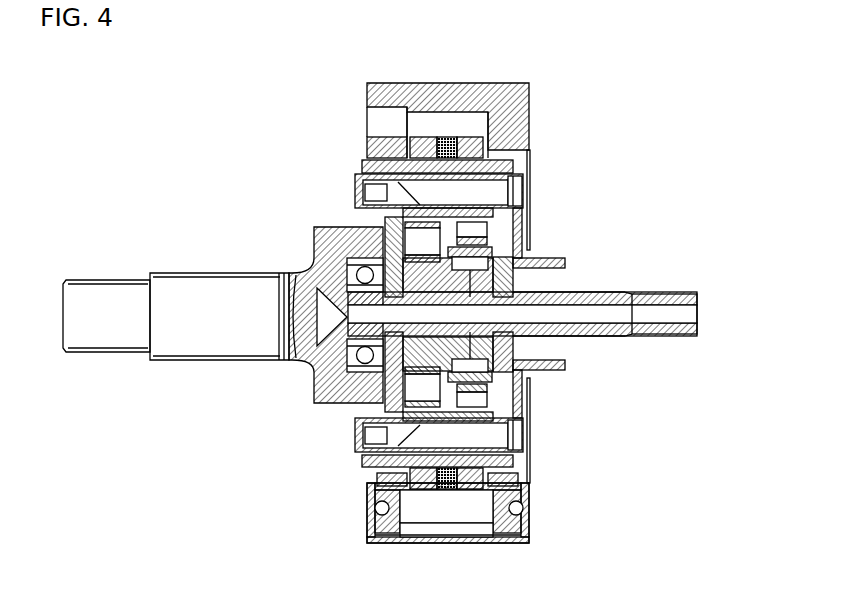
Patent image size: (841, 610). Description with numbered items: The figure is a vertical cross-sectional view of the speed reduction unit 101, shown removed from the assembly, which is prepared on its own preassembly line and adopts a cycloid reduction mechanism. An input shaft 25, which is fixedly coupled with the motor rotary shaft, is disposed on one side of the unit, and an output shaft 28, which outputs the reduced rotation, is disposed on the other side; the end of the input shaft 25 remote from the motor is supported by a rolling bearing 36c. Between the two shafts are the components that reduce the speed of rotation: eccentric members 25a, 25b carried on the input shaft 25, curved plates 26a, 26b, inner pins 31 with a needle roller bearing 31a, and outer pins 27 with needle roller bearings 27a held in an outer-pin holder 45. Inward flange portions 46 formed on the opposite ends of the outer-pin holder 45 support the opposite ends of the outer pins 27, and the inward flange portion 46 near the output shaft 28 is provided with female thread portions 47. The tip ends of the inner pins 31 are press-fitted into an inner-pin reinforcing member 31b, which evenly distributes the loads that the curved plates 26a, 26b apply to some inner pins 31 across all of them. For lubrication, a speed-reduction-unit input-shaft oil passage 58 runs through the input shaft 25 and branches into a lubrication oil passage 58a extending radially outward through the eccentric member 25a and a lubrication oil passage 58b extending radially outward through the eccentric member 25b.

The speed reduction unit 101 is at (219, 142).
The input shaft 25 is at (660, 292).
The eccentric member 25a is at (525, 364).
The eccentric member 25b is at (367, 237).
The curved plate 26a is at (468, 137).
The curved plate 26b is at (427, 137).
The outer pin 27 is at (450, 510).
The needle roller bearing 27a is at (388, 545).
The output shaft 28 is at (103, 310).
The inner pin 31 is at (498, 432).
The needle roller bearing 31a is at (513, 448).
The inner-pin reinforcing member 31b is at (553, 262).
The rolling bearing 36c is at (349, 260).
The outer-pin holder 45 is at (442, 97).
The inward flange portion 46 is at (367, 150).
The female thread portion 47 is at (380, 137).
The speed-reduction-unit input-shaft oil passage 58 is at (662, 312).
The lubrication oil passage 58a is at (520, 295).
The lubrication oil passage 58b is at (520, 337).